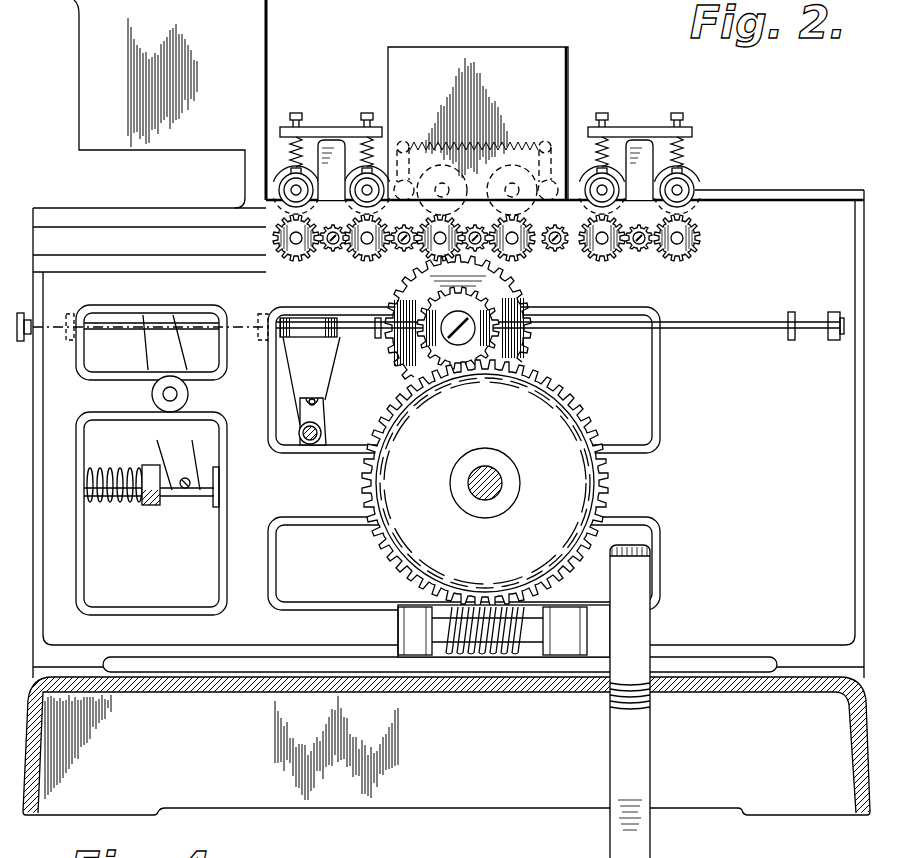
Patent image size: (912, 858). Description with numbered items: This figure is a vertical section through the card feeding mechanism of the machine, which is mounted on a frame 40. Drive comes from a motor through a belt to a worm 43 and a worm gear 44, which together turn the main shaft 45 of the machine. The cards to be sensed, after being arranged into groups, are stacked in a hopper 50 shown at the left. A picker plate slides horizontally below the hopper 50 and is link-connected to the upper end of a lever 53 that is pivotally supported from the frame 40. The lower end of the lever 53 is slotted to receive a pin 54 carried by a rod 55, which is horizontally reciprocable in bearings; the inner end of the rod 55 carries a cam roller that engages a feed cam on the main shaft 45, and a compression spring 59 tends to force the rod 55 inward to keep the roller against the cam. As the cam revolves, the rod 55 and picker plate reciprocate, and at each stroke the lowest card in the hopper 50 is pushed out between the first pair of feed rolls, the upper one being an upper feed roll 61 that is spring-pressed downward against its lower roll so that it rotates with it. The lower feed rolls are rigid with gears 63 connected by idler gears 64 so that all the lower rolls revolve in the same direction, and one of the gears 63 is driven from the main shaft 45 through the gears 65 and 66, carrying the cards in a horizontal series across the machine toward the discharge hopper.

The frame 40 is at (433, 800).
The worm 43 is at (470, 660).
The worm gear 44 is at (580, 492).
The main shaft 45 is at (500, 468).
The hopper 50 is at (267, 58).
The lever 53 is at (156, 352).
The pin 54 is at (186, 492).
The rod 55 is at (114, 478).
The compression spring 59 is at (121, 498).
The upper feed roll 61 is at (486, 179).
The gear 63 is at (301, 255).
The idler gear 64 is at (333, 250).
The gear 65 is at (521, 302).
The gear 66 is at (492, 341).